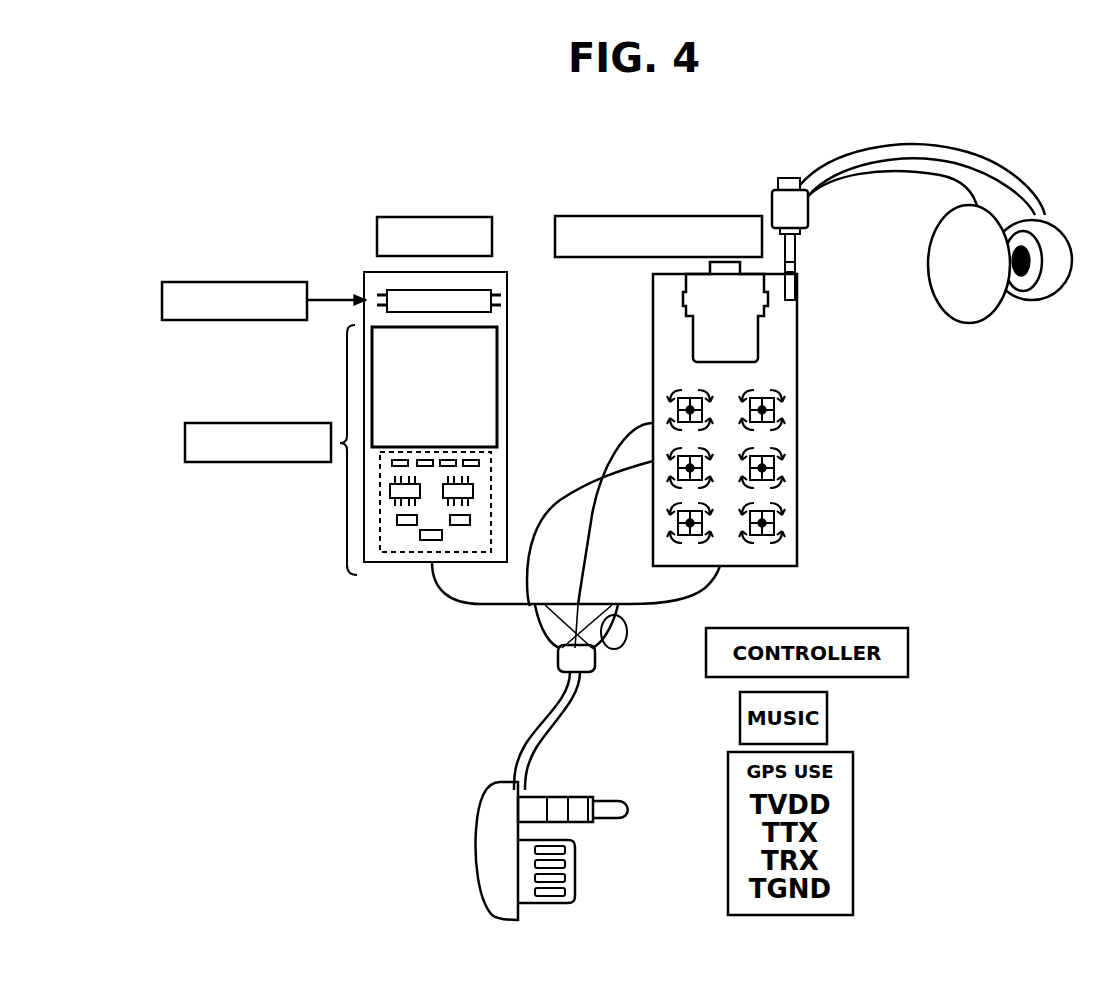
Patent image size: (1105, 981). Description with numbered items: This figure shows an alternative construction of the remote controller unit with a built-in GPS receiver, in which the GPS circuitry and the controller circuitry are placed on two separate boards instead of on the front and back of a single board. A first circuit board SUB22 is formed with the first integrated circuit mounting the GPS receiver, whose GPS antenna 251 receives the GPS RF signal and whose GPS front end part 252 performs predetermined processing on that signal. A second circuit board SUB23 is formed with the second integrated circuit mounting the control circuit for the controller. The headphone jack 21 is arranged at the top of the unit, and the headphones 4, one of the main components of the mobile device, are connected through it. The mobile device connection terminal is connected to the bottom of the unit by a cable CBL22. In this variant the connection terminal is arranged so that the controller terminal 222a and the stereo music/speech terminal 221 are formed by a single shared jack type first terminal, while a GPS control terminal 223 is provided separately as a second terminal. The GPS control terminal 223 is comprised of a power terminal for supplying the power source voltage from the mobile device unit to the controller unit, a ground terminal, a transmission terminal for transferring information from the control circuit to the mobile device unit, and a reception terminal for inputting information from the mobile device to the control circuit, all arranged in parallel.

The GPS antenna 251 is at (237, 282).
The GPS front end part 252 is at (263, 424).
The first circuit board SUB22 is at (507, 340).
The second circuit board SUB23 is at (797, 342).
The headphone jack 21 is at (680, 288).
The headphones 4 is at (1027, 322).
The cable CBL22 is at (513, 736).
The controller terminal 222a is at (705, 655).
The stereo music/speech terminal 221 is at (735, 740).
The GPS control terminal 223 is at (725, 838).